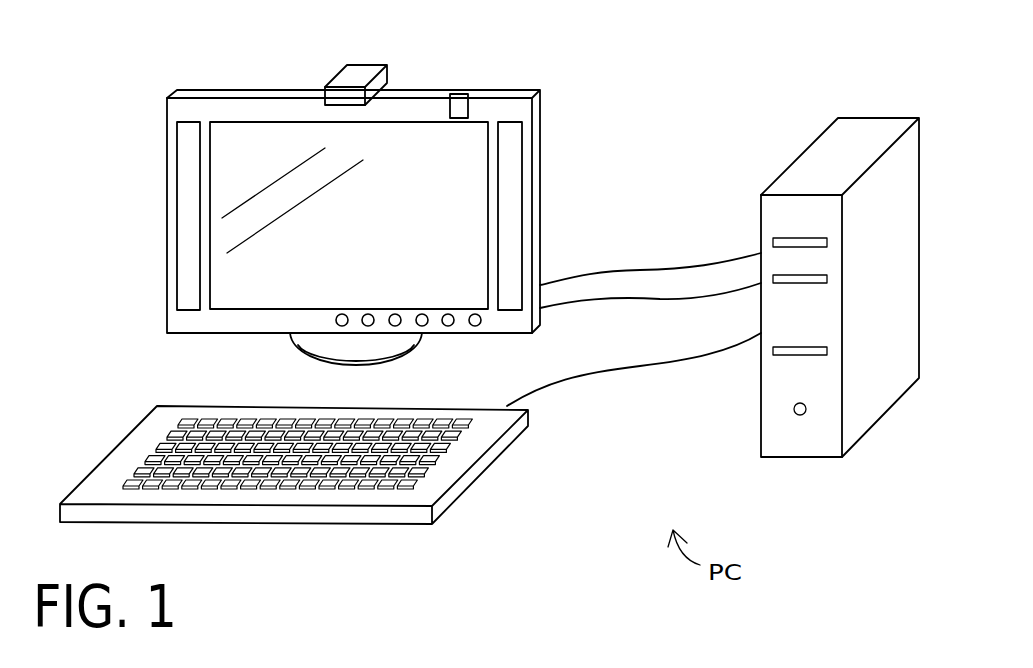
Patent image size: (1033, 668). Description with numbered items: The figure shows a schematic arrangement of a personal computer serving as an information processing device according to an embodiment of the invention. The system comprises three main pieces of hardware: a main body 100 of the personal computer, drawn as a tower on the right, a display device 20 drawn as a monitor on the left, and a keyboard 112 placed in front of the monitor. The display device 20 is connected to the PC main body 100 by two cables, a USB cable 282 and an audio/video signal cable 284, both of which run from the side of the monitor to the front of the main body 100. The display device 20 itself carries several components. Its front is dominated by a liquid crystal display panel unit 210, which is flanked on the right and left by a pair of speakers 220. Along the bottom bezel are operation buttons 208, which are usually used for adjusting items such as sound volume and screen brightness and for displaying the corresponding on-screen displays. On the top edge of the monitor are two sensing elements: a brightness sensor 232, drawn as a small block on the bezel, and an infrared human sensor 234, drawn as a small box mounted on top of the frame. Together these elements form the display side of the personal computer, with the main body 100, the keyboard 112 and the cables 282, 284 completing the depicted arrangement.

The display device 20 is at (567, 65).
The main body 100 is at (862, 123).
The keyboard 112 is at (143, 459).
The operation buttons 208 is at (423, 328).
The liquid crystal display panel unit 210 is at (263, 137).
The speakers 220 is at (187, 186).
The brightness sensor 232 is at (458, 94).
The infrared human sensor 234 is at (387, 72).
The USB cable 282 is at (575, 278).
The audio/video signal cable 284 is at (573, 302).